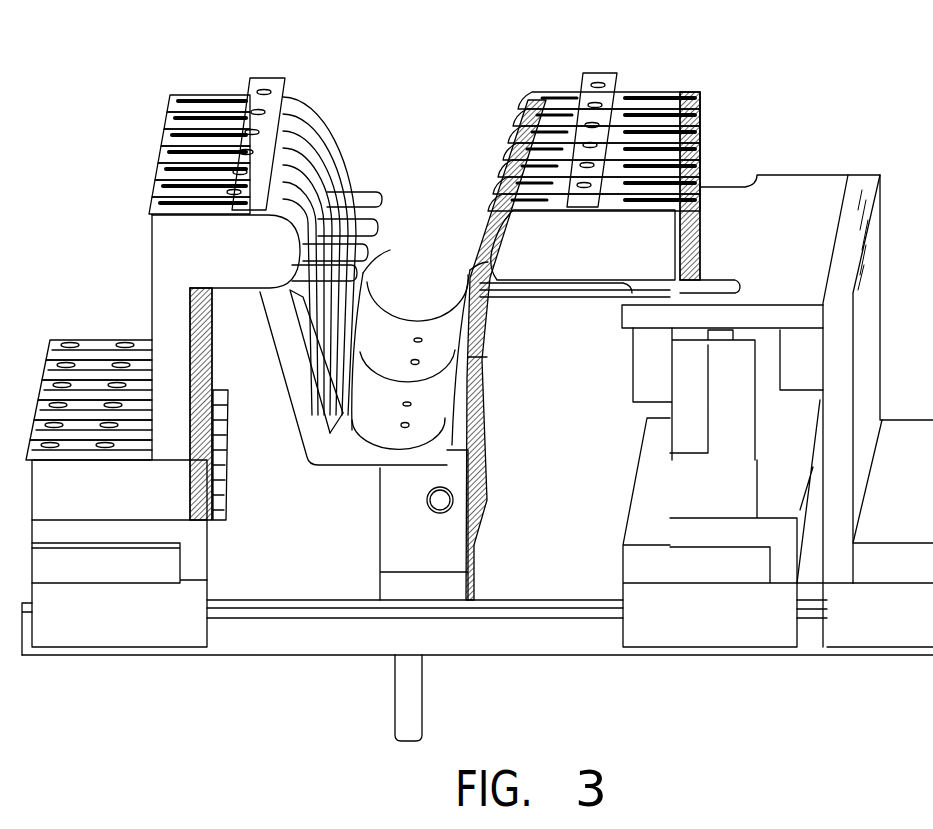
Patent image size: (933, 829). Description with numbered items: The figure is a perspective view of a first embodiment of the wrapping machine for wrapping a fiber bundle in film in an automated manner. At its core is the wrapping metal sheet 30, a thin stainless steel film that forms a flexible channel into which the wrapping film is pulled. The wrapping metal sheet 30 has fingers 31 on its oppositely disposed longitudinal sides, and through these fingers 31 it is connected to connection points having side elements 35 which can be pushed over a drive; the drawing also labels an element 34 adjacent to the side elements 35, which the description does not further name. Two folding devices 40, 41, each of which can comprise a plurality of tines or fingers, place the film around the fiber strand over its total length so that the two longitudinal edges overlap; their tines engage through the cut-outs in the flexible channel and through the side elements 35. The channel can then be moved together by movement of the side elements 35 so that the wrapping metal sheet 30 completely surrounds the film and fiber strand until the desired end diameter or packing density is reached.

The wrapping metal sheet 30 is at (387, 310).
The fingers 31 is at (333, 170).
The flexible strip with holes 34 is at (260, 90).
The side elements 35 is at (207, 93).
The folding device 40 is at (547, 298).
The folding device 41 is at (390, 222).